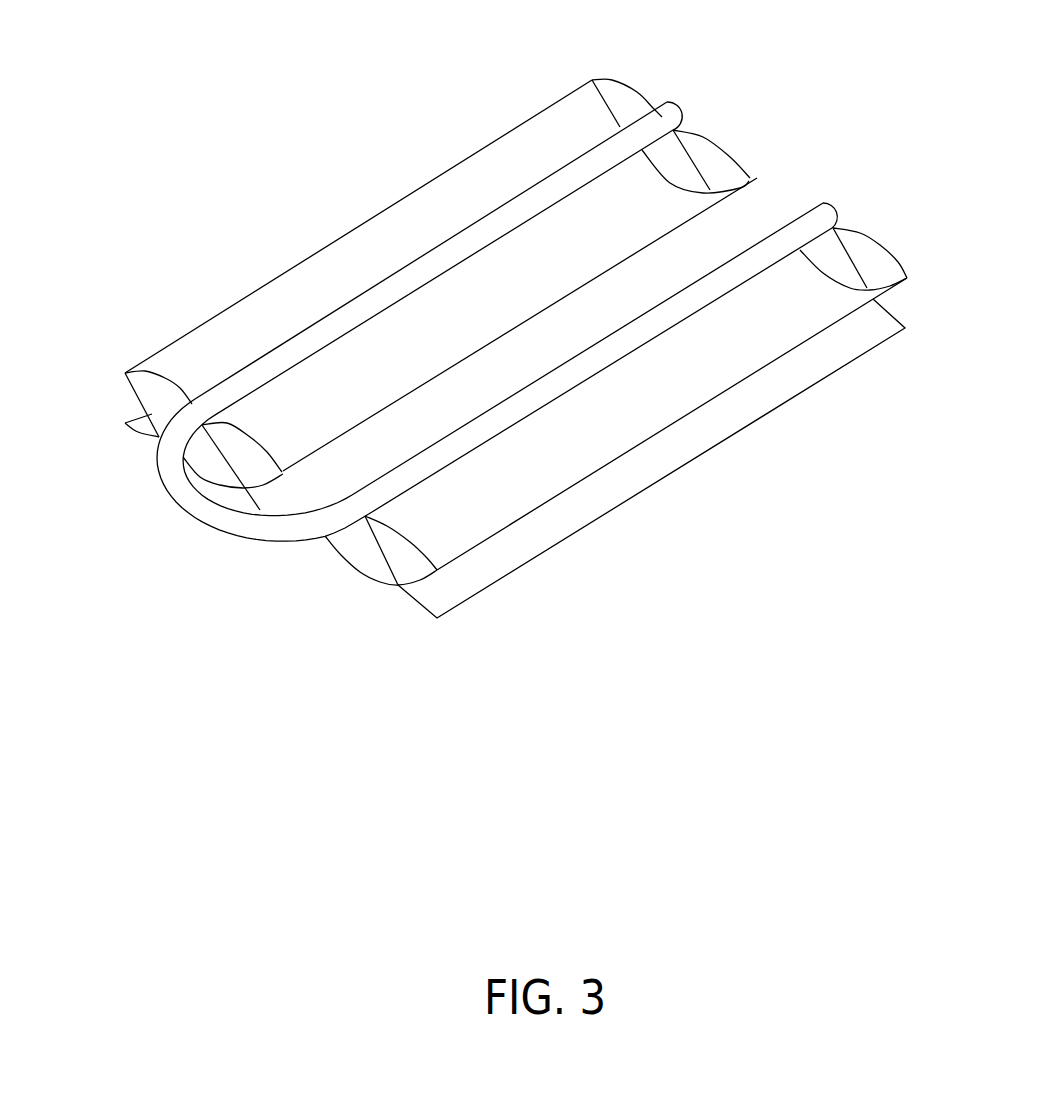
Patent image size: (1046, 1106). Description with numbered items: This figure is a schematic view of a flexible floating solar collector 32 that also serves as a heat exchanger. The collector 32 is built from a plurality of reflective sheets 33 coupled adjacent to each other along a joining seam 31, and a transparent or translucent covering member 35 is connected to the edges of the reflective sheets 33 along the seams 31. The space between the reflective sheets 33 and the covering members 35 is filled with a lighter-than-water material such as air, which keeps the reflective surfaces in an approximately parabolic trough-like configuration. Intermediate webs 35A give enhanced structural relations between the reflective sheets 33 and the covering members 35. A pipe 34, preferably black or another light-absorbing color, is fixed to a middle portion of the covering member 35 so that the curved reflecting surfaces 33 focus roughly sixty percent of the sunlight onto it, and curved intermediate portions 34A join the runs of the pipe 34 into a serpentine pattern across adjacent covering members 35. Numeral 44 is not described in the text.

The joining seam 31 is at (632, 255).
The solar collector 32 is at (605, 593).
The reflective sheet 33 is at (152, 400).
The pipe 34 is at (367, 287).
The curved intermediate portion 34A is at (202, 508).
The covering member 35 is at (568, 112).
The intermediate web 35A is at (688, 158).
The plate top edge 44 is at (476, 153).